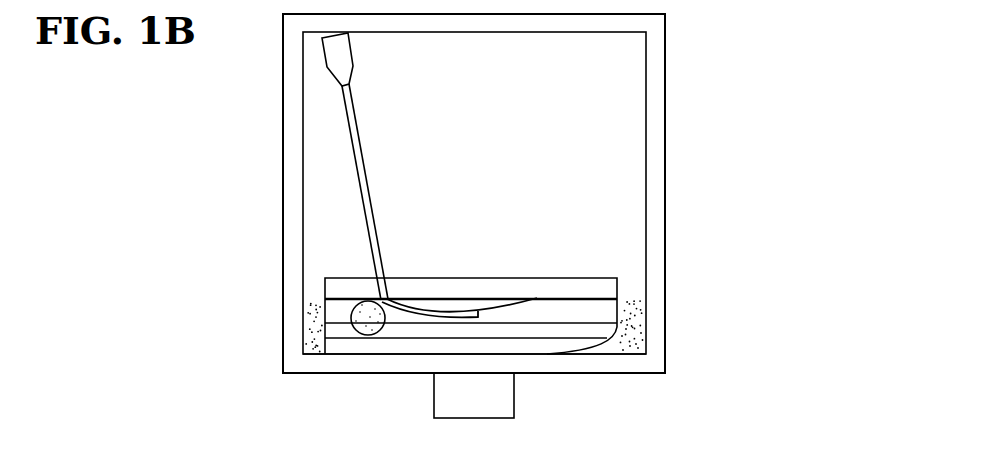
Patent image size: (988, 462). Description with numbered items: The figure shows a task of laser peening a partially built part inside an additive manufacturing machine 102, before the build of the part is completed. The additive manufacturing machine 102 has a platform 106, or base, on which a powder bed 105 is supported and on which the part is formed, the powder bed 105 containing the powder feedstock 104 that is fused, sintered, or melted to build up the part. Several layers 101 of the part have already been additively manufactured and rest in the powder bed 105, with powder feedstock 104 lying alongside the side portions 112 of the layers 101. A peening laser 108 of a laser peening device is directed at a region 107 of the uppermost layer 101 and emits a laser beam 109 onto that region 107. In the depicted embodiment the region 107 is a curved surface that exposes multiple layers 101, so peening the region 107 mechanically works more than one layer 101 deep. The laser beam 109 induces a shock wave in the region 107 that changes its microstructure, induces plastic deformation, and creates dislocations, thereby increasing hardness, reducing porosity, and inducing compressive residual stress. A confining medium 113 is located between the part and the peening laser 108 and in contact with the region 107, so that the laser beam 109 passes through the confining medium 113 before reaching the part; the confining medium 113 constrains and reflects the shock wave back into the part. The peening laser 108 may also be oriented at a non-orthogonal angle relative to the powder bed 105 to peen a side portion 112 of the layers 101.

The layer 101 is at (411, 345).
The additive manufacturing machine 102 is at (683, 72).
The powder feedstock 104 is at (632, 313).
The powder bed 105 is at (632, 293).
The platform 106 is at (578, 365).
The region 107 is at (420, 308).
The peening laser 108 is at (333, 60).
The laser beam 109 is at (349, 123).
The side portion 112 is at (325, 323).
The confining medium 113 is at (512, 290).